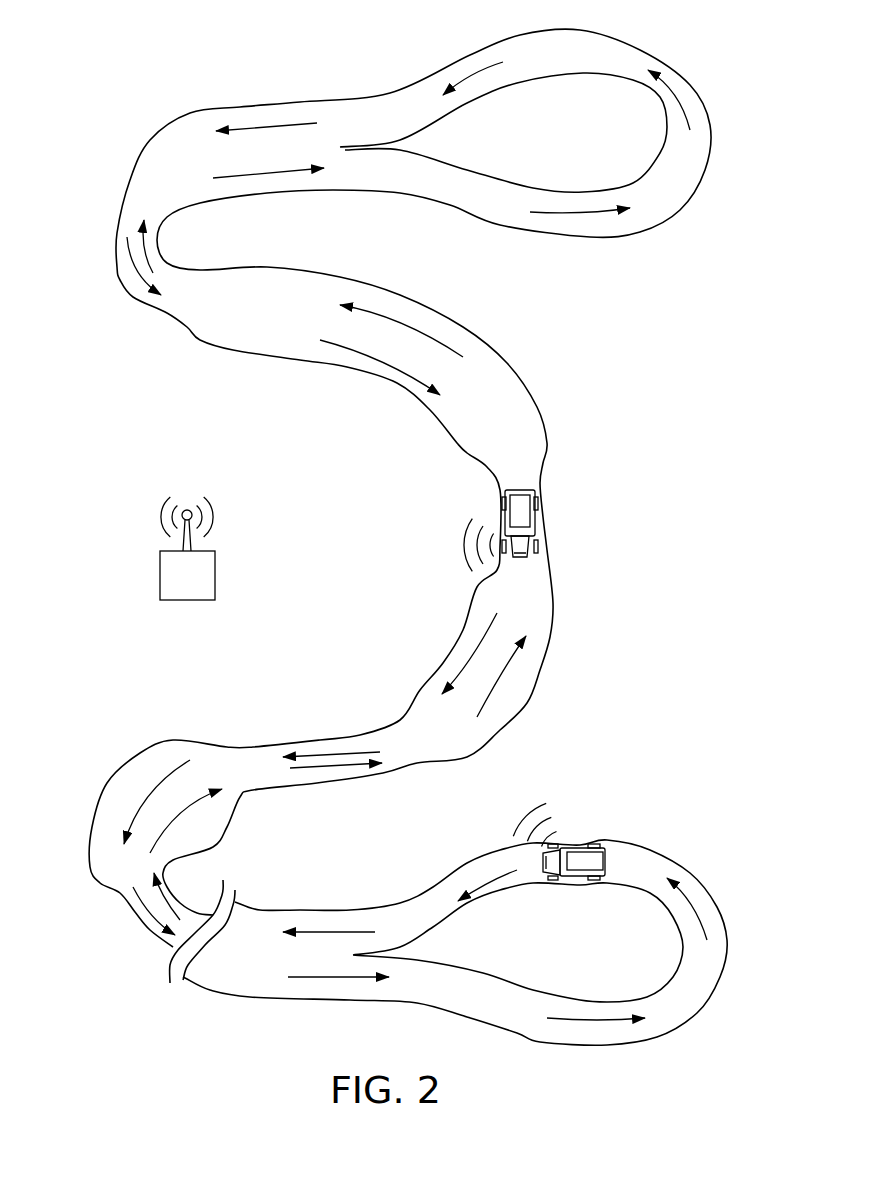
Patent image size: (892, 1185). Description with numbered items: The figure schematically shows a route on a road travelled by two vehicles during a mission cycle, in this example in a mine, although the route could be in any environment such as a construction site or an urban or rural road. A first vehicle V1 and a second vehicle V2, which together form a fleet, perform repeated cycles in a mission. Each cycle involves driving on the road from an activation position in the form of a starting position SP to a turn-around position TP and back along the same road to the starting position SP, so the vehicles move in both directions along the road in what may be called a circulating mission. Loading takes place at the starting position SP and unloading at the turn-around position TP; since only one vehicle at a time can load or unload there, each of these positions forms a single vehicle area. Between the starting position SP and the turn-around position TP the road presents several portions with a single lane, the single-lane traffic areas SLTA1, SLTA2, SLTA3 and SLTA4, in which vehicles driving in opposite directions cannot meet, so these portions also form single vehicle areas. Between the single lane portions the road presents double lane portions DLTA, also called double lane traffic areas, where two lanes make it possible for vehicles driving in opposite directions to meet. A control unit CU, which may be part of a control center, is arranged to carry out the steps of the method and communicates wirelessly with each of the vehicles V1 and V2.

The double lane portion DLTA is at (189, 108).
The single lane portion SLTA1 is at (116, 292).
The single lane portion SLTA2 is at (546, 472).
The single lane portion SLTA3 is at (319, 728).
The single lane portion SLTA4 is at (140, 932).
The starting position SP is at (682, 231).
The turn-around position TP is at (670, 845).
The first vehicle V1 is at (583, 863).
The second vehicle V2 is at (520, 512).
The control unit CU is at (160, 577).